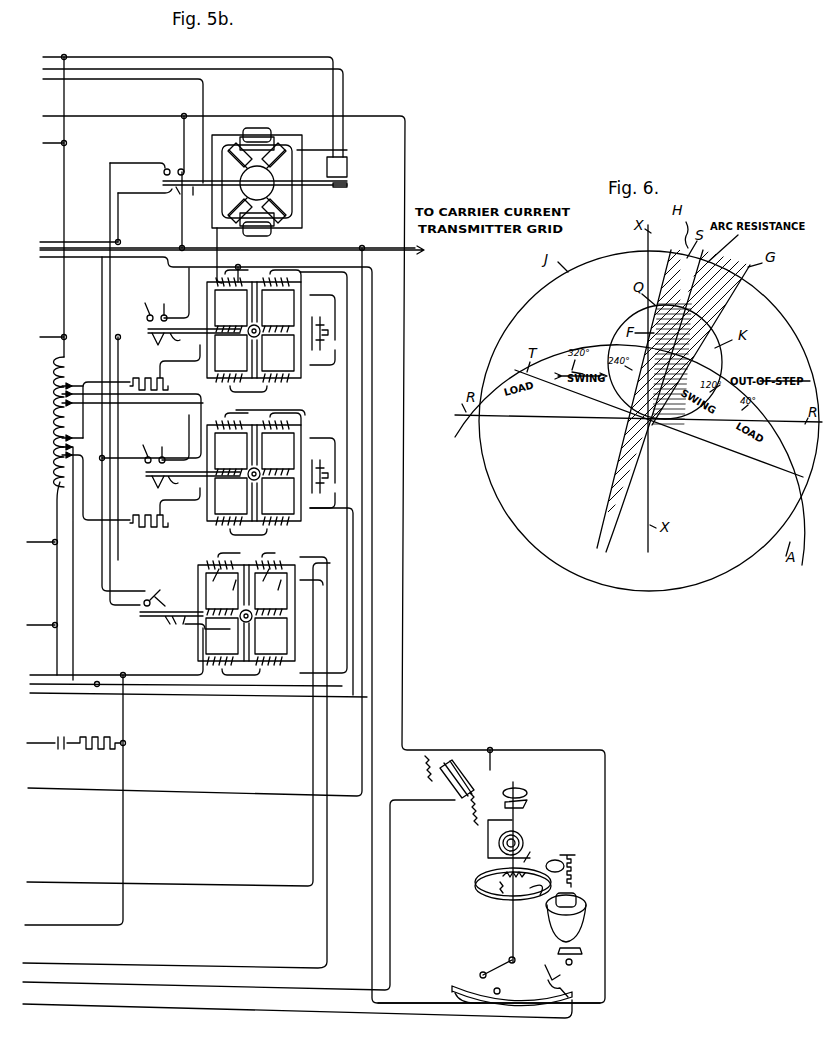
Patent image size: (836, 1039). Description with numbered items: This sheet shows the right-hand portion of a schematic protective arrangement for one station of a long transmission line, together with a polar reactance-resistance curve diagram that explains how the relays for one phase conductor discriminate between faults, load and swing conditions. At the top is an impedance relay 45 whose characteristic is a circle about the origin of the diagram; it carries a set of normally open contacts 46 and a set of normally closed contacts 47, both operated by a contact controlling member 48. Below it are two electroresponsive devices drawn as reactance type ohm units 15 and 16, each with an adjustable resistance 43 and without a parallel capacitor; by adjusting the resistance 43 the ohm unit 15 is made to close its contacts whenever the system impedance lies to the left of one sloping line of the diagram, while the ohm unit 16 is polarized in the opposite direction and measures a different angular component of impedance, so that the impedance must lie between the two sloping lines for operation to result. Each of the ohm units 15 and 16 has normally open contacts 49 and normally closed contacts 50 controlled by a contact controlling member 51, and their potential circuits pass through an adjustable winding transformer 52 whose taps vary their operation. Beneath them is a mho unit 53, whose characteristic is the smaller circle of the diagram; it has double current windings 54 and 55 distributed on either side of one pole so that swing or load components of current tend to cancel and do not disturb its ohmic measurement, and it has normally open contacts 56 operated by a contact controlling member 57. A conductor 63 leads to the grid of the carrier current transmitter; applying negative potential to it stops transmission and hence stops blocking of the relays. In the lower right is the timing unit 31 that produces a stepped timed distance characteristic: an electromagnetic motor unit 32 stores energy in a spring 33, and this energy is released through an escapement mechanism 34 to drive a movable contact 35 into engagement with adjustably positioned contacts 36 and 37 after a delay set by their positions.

The electroresponsive device (reactance type ohm unit) 15 is at (300, 298).
The electroresponsive device (ohm unit) 16 is at (300, 445).
The timing unit 31 is at (556, 811).
The electromagnetic motor unit 32 is at (476, 774).
The spring 33 is at (521, 840).
The escapement mechanism 34 is at (534, 900).
The movable contact 35 is at (490, 968).
The adjustably positioned contacts 36 is at (500, 986).
The adjustably positioned contacts 37 is at (546, 972).
The adjustable resistance 43 is at (148, 542).
The impedance relay 45 is at (298, 150).
The normally open contacts 46 is at (174, 168).
The normally closed contacts 47 is at (172, 196).
The contact controlling member 48 is at (195, 196).
The normally open contacts 49 is at (156, 312).
The normally closed contacts 50 is at (155, 418).
The contact controlling member 51 is at (192, 336).
The adjustable winding transformer 52 is at (48, 380).
The mho unit 53 is at (200, 584).
The current winding 54 is at (243, 585).
The current winding 55 is at (257, 595).
The normally open contacts 56 is at (150, 598).
The contact controlling member 57 is at (178, 612).
The conductor 63 is at (380, 247).